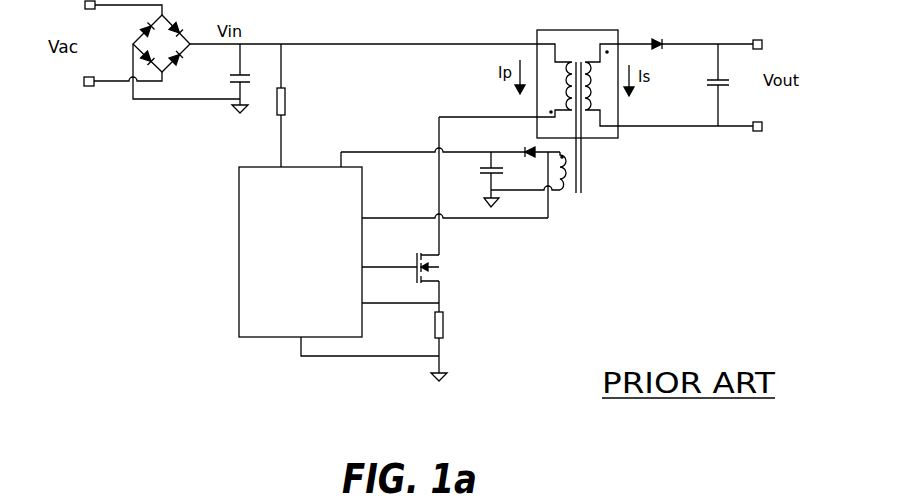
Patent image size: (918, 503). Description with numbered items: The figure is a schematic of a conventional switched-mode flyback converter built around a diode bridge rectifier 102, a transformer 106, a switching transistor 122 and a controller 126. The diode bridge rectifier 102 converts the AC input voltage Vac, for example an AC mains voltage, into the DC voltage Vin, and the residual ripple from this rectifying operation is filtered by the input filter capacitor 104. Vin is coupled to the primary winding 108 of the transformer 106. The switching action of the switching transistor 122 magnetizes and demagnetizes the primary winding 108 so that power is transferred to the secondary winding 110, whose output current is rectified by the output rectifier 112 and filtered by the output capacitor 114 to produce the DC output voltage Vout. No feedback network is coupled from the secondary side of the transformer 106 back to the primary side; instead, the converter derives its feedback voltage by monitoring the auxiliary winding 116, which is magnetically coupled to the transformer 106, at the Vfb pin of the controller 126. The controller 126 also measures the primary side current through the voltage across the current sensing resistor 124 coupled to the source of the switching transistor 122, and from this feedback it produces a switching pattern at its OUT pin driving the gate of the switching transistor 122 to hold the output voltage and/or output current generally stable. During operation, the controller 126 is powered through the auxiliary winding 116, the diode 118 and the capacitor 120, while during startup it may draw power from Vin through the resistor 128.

The diode bridge rectifier 102 is at (178, 27).
The input filter capacitor 104 is at (229, 77).
The transformer 106 is at (572, 30).
The primary winding 108 is at (555, 80).
The secondary winding 110 is at (669, 85).
The output rectifier 112 is at (656, 40).
The output capacitor 114 is at (711, 79).
The auxiliary winding 116 is at (582, 180).
The diode 118 is at (528, 148).
The capacitor 120 is at (490, 182).
The switching transistor 122 is at (438, 274).
The current sensing resistor 124 is at (444, 326).
The controller 126 is at (339, 254).
The resistor 128 is at (286, 103).